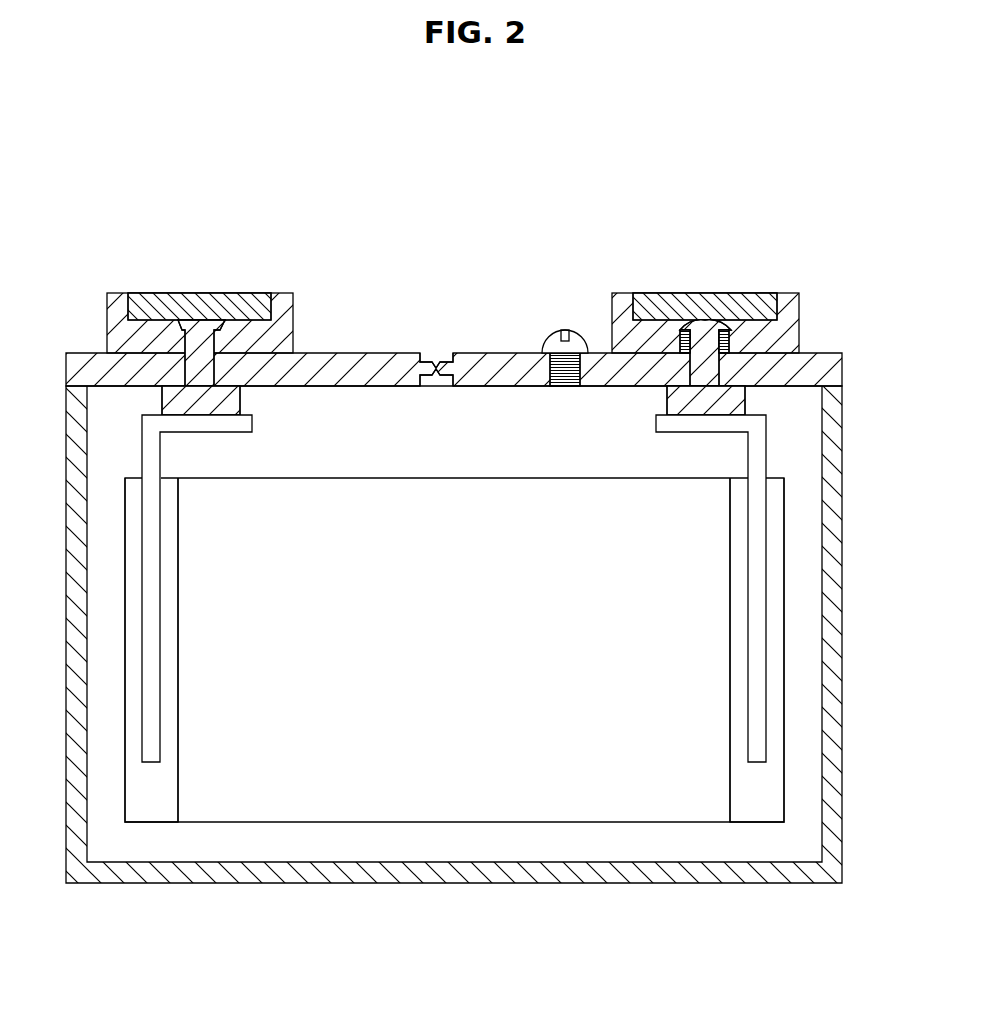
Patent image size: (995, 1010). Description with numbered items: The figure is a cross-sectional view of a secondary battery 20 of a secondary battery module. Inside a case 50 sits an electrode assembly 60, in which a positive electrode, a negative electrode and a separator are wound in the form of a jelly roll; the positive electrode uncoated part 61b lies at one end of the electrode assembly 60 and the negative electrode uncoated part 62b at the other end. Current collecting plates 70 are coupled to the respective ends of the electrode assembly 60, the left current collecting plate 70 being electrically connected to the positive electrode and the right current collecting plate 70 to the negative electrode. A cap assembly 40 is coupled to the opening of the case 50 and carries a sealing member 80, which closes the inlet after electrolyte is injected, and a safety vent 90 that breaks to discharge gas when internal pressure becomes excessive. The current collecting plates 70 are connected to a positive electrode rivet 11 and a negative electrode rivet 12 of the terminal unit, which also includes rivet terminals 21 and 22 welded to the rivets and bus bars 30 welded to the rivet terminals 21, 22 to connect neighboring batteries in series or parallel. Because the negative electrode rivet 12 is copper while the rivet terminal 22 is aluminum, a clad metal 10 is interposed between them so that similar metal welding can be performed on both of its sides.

The secondary battery 20 is at (752, 185).
The rivet terminal 21 is at (119, 293).
The rivet terminal 22 is at (789, 293).
The bus bar 30 is at (196, 293).
The positive electrode rivet 11 is at (213, 347).
The negative electrode rivet 12 is at (750, 398).
The clad metal 10 is at (680, 360).
The cap assembly 40 is at (826, 370).
The case 50 is at (838, 605).
The electrode assembly 60 is at (468, 665).
The positive electrode uncoated part 61b is at (170, 798).
The negative electrode uncoated part 62b is at (740, 798).
The current collecting plate 70 is at (156, 450).
The sealing member 80 is at (565, 330).
The safety vent 90 is at (437, 360).